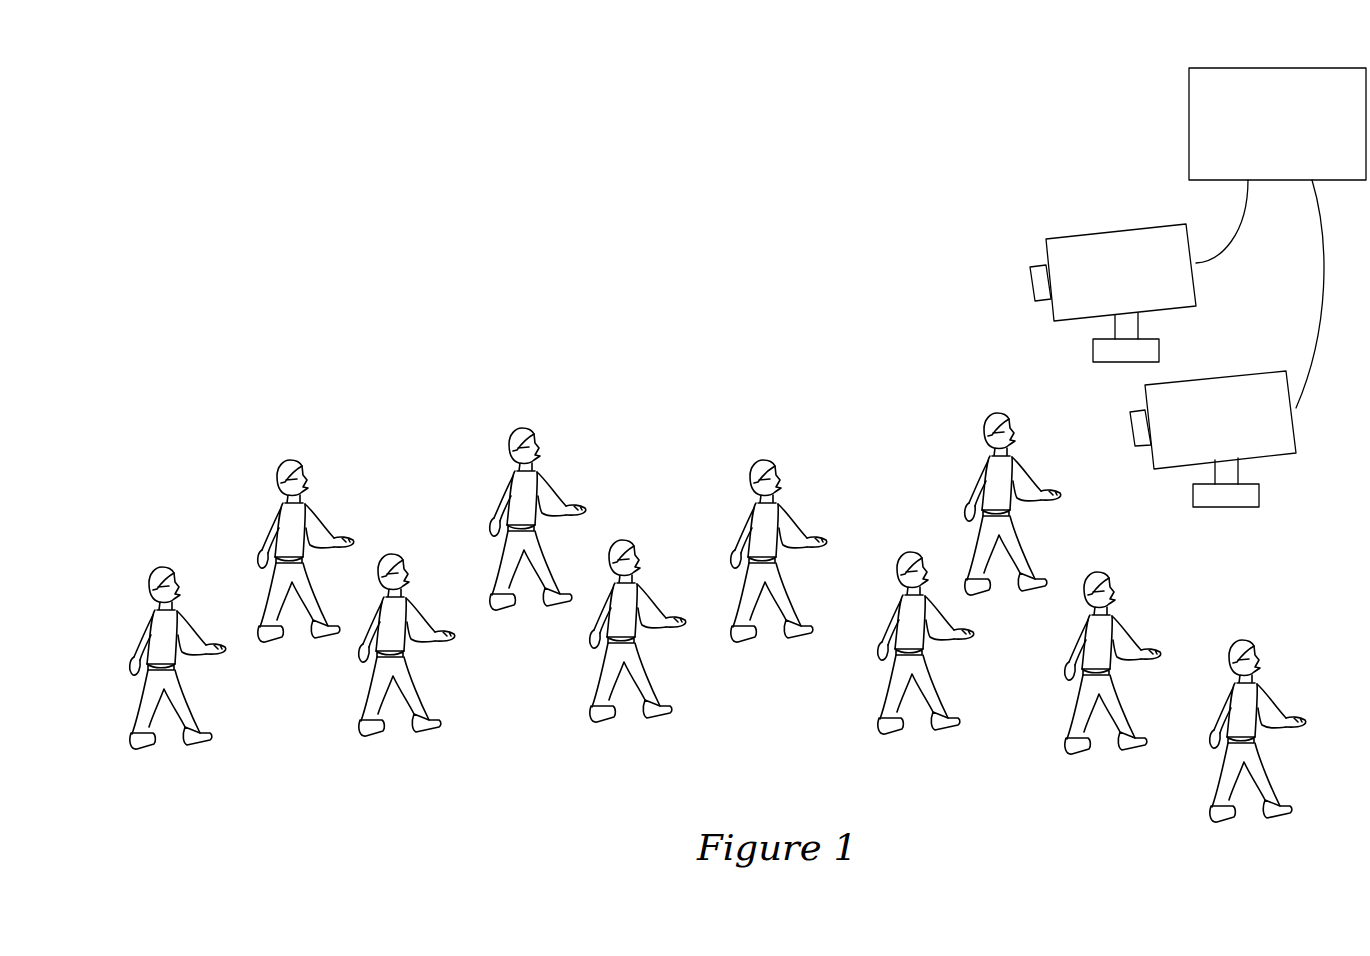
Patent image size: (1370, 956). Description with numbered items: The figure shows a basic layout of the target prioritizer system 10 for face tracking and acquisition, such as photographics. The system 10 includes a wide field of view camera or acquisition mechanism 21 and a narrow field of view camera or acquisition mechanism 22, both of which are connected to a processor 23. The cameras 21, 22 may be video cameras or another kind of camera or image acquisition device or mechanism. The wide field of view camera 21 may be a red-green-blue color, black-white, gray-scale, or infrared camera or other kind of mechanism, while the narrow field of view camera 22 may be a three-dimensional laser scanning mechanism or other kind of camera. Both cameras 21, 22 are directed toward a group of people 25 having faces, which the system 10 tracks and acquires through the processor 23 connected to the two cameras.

The target prioritizer system 10 is at (906, 124).
The wide field of view camera 21 is at (1116, 230).
The narrow field of view camera 22 is at (1228, 375).
The processor 23 is at (1280, 68).
The people 25 is at (733, 297).